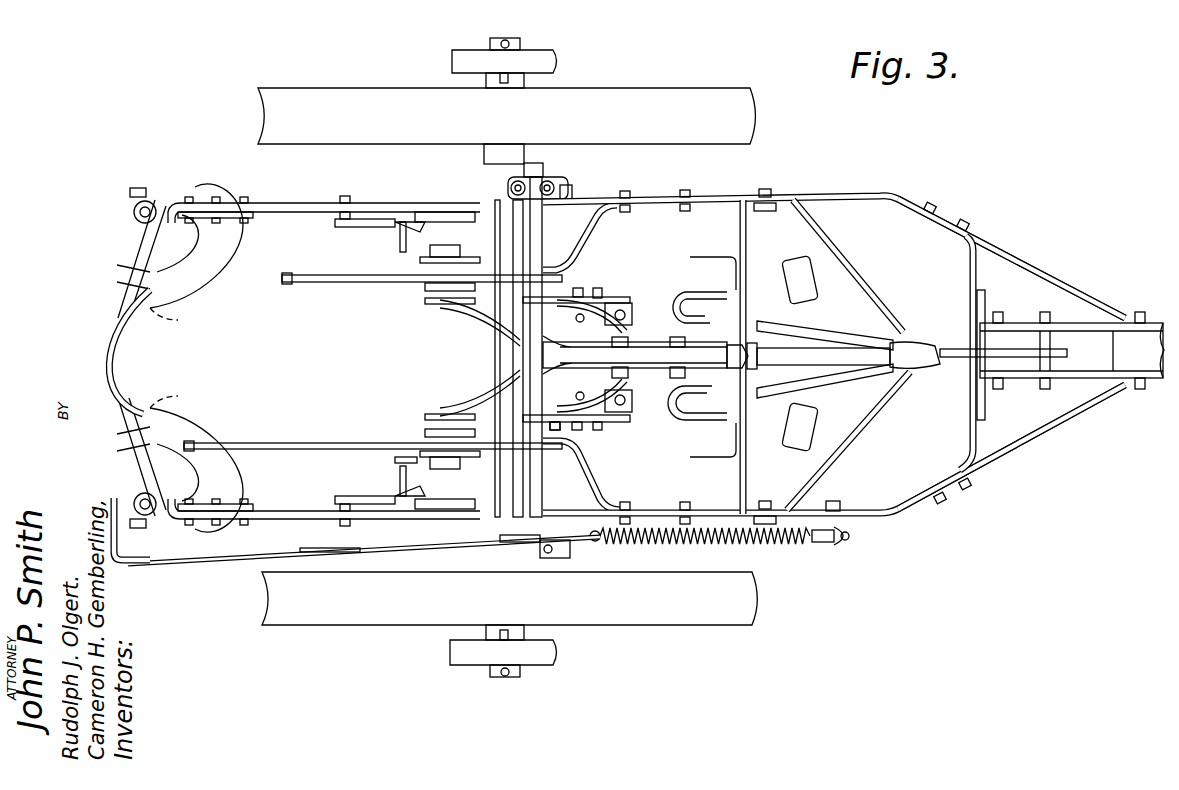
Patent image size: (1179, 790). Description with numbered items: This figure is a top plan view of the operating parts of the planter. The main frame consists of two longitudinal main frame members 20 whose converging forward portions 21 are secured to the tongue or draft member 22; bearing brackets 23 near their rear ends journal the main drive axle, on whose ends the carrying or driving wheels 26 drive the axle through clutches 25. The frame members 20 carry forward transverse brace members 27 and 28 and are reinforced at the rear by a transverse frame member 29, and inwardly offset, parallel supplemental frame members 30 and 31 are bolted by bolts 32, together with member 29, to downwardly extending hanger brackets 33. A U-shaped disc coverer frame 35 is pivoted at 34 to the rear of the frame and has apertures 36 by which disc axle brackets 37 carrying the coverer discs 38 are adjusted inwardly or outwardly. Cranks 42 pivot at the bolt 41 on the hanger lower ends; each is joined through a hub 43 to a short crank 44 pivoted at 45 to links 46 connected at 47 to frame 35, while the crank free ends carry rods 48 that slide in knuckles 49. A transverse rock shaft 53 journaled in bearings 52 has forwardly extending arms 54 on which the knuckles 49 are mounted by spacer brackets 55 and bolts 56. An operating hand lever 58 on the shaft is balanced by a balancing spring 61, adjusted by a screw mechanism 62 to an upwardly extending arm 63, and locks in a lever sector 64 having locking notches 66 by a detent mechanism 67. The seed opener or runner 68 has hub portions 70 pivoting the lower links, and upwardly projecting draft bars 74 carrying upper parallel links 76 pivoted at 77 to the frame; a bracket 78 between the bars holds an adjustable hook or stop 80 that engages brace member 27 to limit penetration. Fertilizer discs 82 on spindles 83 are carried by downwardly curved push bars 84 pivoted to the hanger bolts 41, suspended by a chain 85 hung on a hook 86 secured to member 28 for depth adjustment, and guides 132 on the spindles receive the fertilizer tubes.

The main frame members 20 is at (842, 194).
The converging forward portions 21 is at (1034, 266).
The tongue or draft member 22 is at (1140, 362).
The bearing brackets 23 is at (570, 193).
The clutches 25 is at (556, 66).
The carrying or driving wheels 26 is at (662, 88).
The forward transverse brace member 27 is at (968, 435).
The forward transverse brace member 28 is at (748, 468).
The rear transverse frame member 29 is at (494, 372).
The supplemental frame member 30 is at (316, 443).
The supplemental frame member 31 is at (330, 283).
The bolts 32 is at (446, 258).
The hanger brackets 33 is at (415, 287).
The pivotal connection 34 is at (460, 200).
The disc coverer frame 35 is at (118, 372).
The apertures 36 is at (148, 311).
The disc axle brackets 37 is at (133, 246).
The discs 38 is at (208, 264).
The pivot bolt 41 is at (408, 228).
The cranks 42 is at (442, 318).
The hub or bearing 43 is at (400, 250).
The short crank 44 is at (424, 203).
The pivotal connection 45 is at (412, 463).
The links 46 is at (352, 227).
The connection 47 is at (345, 196).
The rods 48 is at (606, 300).
The knuckles 49 is at (627, 307).
The bearings 52 is at (545, 172).
The transverse rock shaft 53 is at (543, 225).
The forwardly extending arms 54 is at (604, 290).
The spacer brackets 55 is at (580, 431).
The bolts 56 is at (582, 314).
The operating hand lever 58 is at (244, 565).
The balancing spring 61 is at (760, 546).
The screw mechanism 62 is at (824, 543).
The upwardly extending arm 63 is at (842, 506).
The lever sector 64 is at (482, 548).
The locking notches 66 is at (556, 548).
The detent mechanism 67 is at (316, 552).
The runner or seed opener 68 is at (442, 352).
The hub portions 70 is at (622, 338).
The draft bars 74 is at (868, 352).
The upper parallel links 76 is at (850, 250).
The pivots 77 is at (768, 189).
The bracket 78 is at (906, 340).
The adjustable hook or stop 80 is at (1018, 348).
The concavo-convex discs 82 is at (845, 328).
The spindles 83 is at (820, 325).
The downwardly curved bars 84 is at (662, 353).
The chain 85 is at (523, 302).
The hook 86 is at (806, 330).
The guides 132 is at (700, 292).